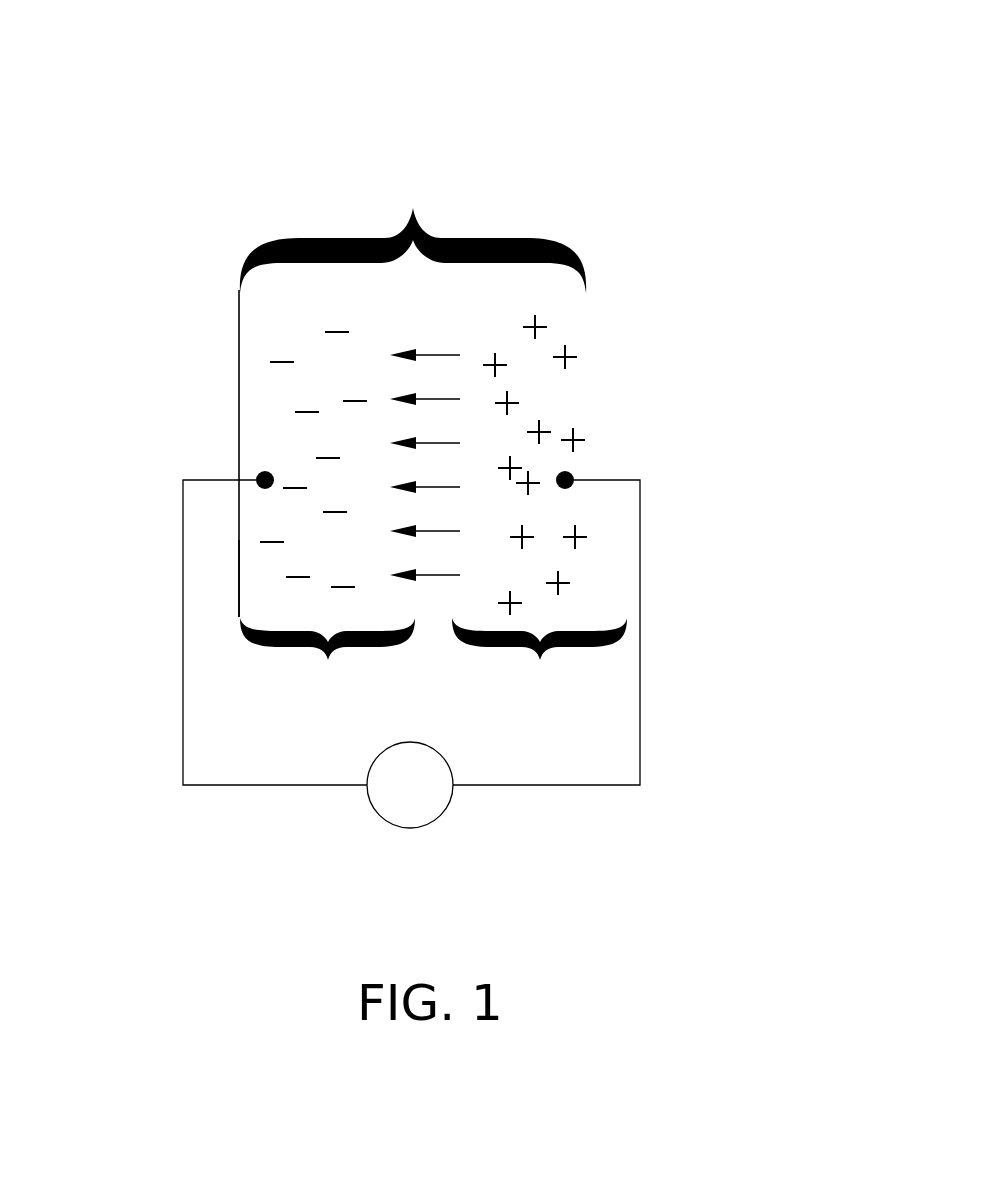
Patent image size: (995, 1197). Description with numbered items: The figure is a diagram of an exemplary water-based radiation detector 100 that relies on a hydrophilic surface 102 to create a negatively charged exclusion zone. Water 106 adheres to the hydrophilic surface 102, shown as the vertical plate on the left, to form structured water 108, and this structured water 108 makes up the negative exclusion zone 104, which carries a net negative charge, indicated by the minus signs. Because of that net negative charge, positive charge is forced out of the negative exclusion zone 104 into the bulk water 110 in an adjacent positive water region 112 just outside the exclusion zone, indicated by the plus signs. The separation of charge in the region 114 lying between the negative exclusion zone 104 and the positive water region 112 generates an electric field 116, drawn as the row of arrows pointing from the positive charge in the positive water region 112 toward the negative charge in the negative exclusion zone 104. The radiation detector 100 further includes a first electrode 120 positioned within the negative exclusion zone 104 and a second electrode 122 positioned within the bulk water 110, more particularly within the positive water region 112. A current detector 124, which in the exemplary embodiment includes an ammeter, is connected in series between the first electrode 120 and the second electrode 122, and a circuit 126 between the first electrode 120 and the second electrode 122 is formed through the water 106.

The water-based radiation detector 100 is at (587, 186).
The hydrophilic surface 102 is at (238, 362).
The negative exclusion zone 104 is at (259, 567).
The water 106 is at (413, 234).
The structured water 108 is at (327, 513).
The bulk water 110 is at (539, 656).
The positive water region 112 is at (560, 392).
The region between negative exclusion zone and positive water region 114 is at (428, 598).
The electric field 116 is at (448, 576).
The first electrode 120 is at (265, 476).
The second electrode 122 is at (567, 476).
The current detector 124 is at (446, 808).
The circuit 126 is at (654, 704).